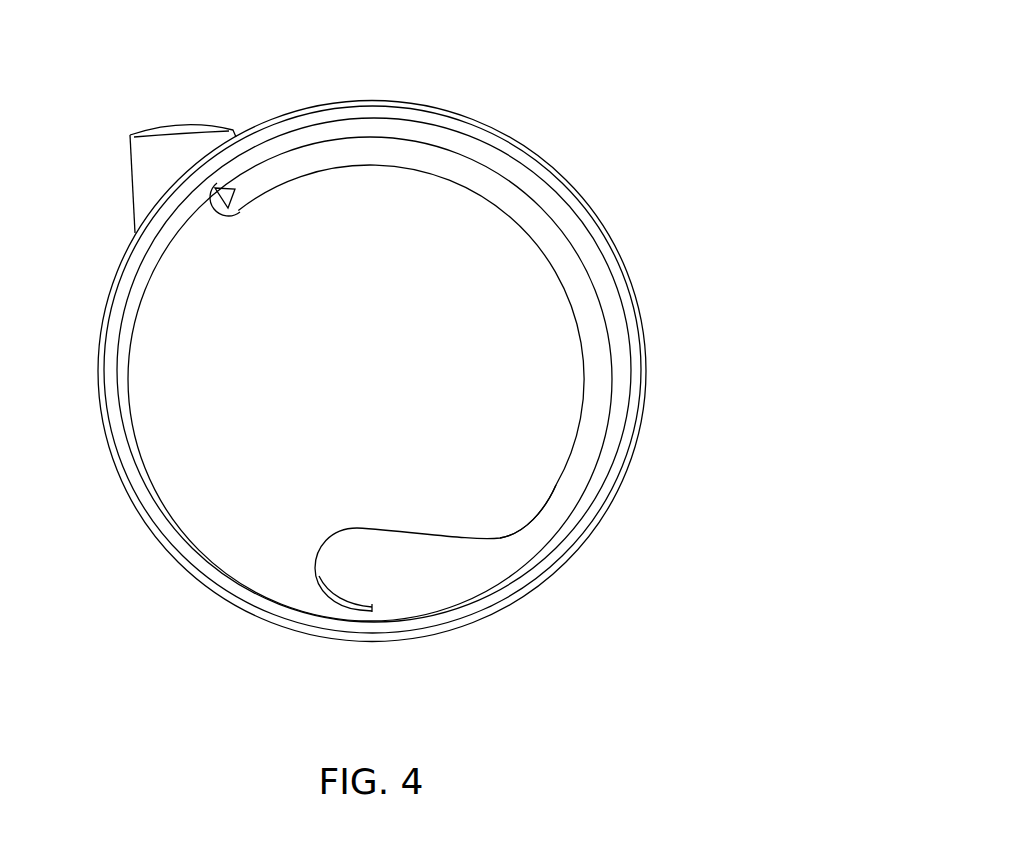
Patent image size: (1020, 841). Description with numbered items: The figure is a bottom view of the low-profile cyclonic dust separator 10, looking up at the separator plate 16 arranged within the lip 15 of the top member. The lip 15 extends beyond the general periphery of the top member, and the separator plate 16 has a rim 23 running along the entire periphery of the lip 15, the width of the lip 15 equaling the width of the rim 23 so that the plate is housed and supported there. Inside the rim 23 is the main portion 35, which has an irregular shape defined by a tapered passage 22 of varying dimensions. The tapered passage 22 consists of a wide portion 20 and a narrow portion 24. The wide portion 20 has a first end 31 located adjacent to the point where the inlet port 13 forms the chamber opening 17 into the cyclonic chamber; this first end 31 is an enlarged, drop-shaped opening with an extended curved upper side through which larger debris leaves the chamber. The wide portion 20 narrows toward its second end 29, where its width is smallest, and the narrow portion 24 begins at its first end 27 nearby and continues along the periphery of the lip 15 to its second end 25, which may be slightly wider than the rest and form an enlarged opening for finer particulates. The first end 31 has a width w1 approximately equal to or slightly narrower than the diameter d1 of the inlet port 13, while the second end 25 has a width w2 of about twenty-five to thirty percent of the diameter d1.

The dust separator 10 is at (609, 72).
The inlet port 13 is at (219, 113).
The lip 15 is at (620, 251).
The separator plate 16 is at (178, 431).
The chamber opening 17 is at (165, 107).
The wide portion 20 is at (416, 571).
The tapered passage 22 is at (521, 542).
The rim 23 is at (617, 326).
The narrow portion 24 is at (433, 165).
The second end of the narrow portion 25 is at (239, 214).
The first end of the narrow portion 27 is at (582, 453).
The second end of the wide portion 29 is at (578, 463).
The first end of the wide portion 31 is at (323, 592).
The main portion 35 is at (223, 523).
The width w1 is at (352, 530).
The width w2 is at (224, 155).
The diameter d1 is at (229, 131).